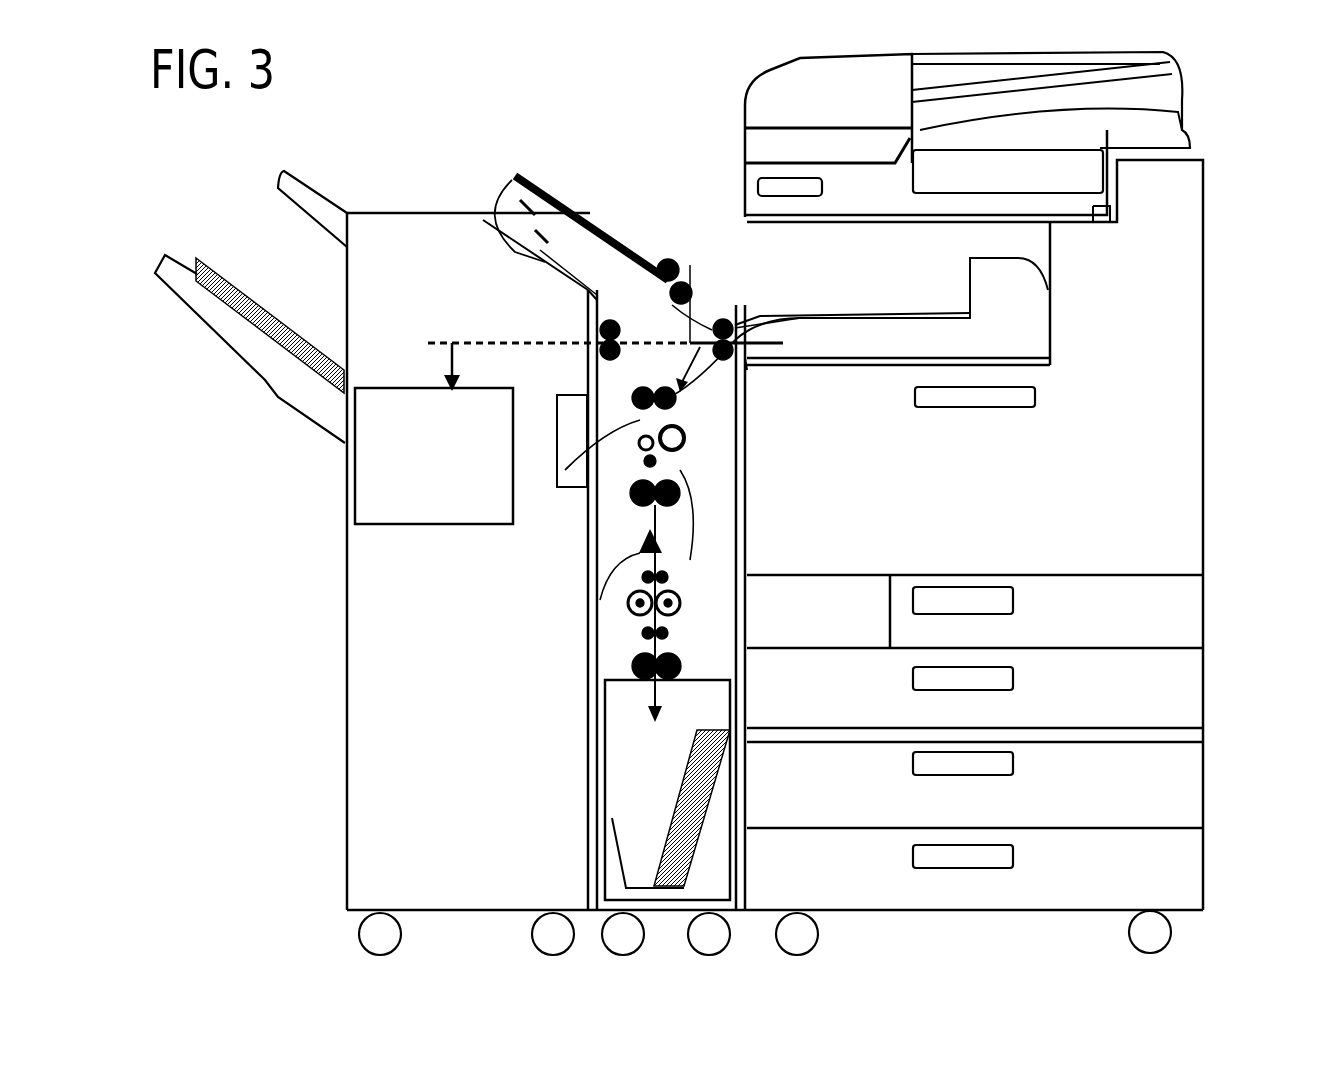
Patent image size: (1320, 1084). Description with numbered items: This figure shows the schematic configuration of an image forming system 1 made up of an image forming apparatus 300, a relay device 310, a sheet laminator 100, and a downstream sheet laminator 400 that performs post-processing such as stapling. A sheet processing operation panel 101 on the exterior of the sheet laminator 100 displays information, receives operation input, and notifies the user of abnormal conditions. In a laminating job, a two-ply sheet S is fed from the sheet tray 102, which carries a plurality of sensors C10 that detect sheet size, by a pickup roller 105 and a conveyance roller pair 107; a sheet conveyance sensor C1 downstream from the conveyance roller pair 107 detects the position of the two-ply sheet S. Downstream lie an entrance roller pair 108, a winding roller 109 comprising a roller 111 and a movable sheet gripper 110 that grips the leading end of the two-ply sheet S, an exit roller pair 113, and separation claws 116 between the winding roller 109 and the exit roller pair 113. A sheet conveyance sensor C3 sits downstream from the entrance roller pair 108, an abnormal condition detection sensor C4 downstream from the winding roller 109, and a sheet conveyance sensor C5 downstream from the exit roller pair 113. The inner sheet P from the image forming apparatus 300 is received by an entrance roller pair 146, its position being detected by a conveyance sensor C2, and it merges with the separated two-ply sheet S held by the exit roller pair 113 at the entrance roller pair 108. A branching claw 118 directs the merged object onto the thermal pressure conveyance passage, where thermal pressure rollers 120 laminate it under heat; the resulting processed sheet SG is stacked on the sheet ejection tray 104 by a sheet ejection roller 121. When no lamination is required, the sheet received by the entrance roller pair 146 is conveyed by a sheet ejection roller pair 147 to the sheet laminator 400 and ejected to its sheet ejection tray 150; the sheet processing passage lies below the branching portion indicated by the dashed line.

The image forming system 1 is at (538, 88).
The sheet laminator 100 is at (735, 158).
The sheet processing operation panel 101 is at (1083, 173).
The sheet tray 102 is at (506, 182).
The sheet ejection tray 104 is at (740, 792).
The pickup roller 105 is at (655, 262).
The conveyance roller pair 107 is at (690, 266).
The entrance roller pair 108 is at (618, 393).
The winding roller 109 is at (738, 426).
The sheet gripper 110 is at (687, 438).
The roller 111 is at (672, 452).
The exit roller pair 113 is at (626, 498).
The separation claws 116 is at (592, 466).
The branching claw 118 is at (635, 548).
The thermal pressure rollers 120 is at (628, 604).
The sheet ejection roller 121 is at (632, 664).
The entrance roller pair 146 is at (748, 372).
The sheet ejection roller pair 147 is at (598, 328).
The sheet ejection tray 150 is at (226, 338).
The image forming apparatus 300 is at (1154, 300).
The relay device 310 is at (975, 298).
The sheet laminator 400 is at (391, 236).
The sheet conveyance sensor C1 is at (698, 298).
The conveyance sensor C2 is at (740, 310).
The sheet conveyance sensor C3 is at (672, 412).
The abnormal condition detection sensor C4 is at (680, 490).
The sheet conveyance sensor C5 is at (688, 520).
The sensors C10 is at (526, 248).
The inner sheet P is at (805, 312).
The two-ply sheet S is at (557, 194).
The processed sheet SG is at (666, 814).